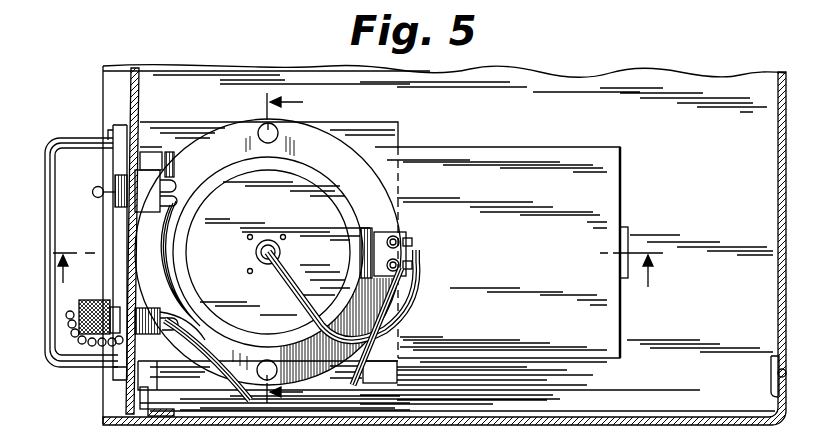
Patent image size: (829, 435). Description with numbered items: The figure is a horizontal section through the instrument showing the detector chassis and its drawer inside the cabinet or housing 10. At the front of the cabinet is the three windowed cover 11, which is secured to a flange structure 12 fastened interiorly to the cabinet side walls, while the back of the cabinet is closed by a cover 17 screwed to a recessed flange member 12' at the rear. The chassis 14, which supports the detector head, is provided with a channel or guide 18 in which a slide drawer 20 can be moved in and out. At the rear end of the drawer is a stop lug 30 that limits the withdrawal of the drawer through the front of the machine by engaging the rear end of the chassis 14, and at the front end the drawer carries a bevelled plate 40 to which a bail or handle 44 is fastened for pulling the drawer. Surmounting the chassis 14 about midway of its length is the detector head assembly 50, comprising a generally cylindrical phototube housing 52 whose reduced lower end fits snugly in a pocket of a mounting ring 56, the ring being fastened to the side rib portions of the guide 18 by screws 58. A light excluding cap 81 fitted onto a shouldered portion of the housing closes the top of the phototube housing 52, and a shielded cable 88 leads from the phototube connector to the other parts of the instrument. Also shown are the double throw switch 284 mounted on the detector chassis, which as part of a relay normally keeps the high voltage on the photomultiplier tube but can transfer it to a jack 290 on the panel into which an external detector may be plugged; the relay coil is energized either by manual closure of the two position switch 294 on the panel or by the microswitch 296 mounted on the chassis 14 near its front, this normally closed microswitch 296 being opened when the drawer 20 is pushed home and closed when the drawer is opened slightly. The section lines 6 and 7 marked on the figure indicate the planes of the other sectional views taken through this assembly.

The section line 6— 6 is at (359, 272).
The section line 7— 7 is at (290, 244).
The cabinet or housing 10 is at (675, 398).
The three windowed cover 11 is at (143, 76).
The flange structure 12 is at (169, 401).
The recessed flange member 12' is at (757, 376).
The chassis 14 is at (127, 238).
The cover 17 is at (775, 310).
The channel or guide 18 is at (400, 157).
The slide drawer 20 is at (533, 160).
The stop lug 30 is at (627, 237).
The bevelled plate 40 is at (115, 218).
The bail or handle 44 is at (50, 192).
The detector head assembly 50 is at (297, 147).
The phototube housing 52 is at (324, 174).
The mounting ring 56 is at (341, 148).
The screws 58 is at (257, 138).
The light excluding cap 81 is at (225, 190).
The shielded cable 88 is at (285, 290).
The double throw switch 284 is at (400, 243).
The jack 290 is at (117, 318).
The two position switch 294 is at (101, 187).
The microswitch 296 is at (153, 152).